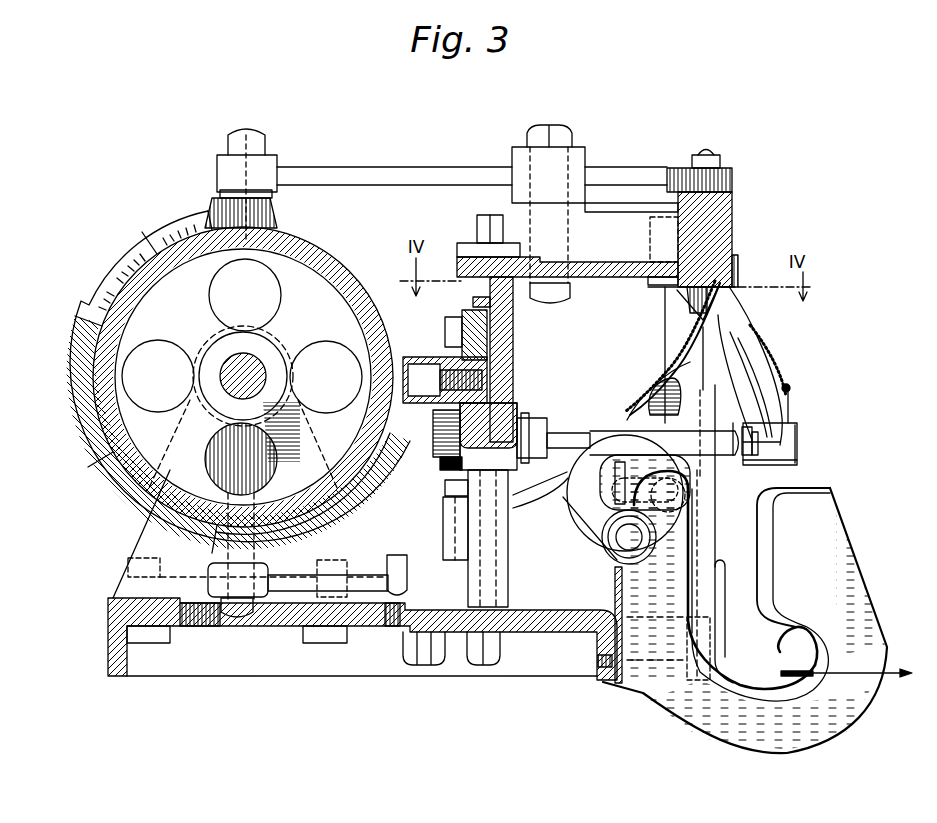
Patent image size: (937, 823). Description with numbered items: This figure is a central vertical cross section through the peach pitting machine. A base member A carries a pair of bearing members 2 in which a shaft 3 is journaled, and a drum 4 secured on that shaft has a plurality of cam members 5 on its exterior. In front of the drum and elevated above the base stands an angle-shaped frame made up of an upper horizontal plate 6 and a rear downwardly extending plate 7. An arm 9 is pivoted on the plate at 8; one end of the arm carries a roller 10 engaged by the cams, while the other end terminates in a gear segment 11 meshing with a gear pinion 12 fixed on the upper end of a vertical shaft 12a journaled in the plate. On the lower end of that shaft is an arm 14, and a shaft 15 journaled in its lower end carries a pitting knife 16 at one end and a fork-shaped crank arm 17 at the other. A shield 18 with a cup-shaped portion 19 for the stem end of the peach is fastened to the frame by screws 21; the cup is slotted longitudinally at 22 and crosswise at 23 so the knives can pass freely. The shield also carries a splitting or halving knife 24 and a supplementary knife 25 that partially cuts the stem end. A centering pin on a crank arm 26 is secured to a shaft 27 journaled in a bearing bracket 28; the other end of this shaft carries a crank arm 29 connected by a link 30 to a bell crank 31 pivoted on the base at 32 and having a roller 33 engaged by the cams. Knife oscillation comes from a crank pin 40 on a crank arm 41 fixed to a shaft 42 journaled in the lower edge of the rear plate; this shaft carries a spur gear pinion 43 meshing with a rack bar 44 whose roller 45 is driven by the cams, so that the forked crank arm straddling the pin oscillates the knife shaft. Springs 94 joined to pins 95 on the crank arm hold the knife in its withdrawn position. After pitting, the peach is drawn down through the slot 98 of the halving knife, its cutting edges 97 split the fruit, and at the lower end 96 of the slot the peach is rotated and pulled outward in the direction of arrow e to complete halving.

The bearing members 2 is at (118, 556).
The shaft 3 is at (253, 377).
The drum 4 is at (72, 430).
The cam members 5 is at (75, 326).
The upper horizontal plate 6 is at (640, 276).
The rear downwardly extending plate 7 is at (518, 365).
The pivot 8 is at (568, 140).
The arm 9 is at (418, 168).
The roller 10 is at (218, 194).
The gear segments 11 is at (683, 170).
The gear pinion 12 is at (734, 184).
The shaft 12a is at (720, 157).
The arm 14 is at (742, 320).
The shaft 15 is at (797, 447).
The pitting knife 16 is at (740, 432).
The fork-shaped crank arm 17 is at (797, 461).
The shield 18 is at (612, 690).
The cup-shaped portion 19 is at (632, 392).
The screws 21 is at (740, 266).
The longitudinal slot 22 is at (618, 527).
The crosswise slot 23 is at (633, 424).
The splitting or halving knife 24 is at (690, 722).
The supplementary knife 25 is at (660, 377).
The crank arm 26 is at (578, 500).
The shaft 27 is at (614, 545).
The bearing bracket 28 is at (612, 568).
The crank arm 29 is at (695, 518).
The link 30 is at (514, 512).
The bell crank 31 is at (455, 522).
The pivot 32 is at (398, 558).
The roller 33 is at (200, 562).
The crank pin 40 is at (566, 441).
The crank arm 41 is at (524, 418).
The shaft 42 is at (516, 395).
The spur gear pinion 43 is at (440, 475).
The rack bar 44 is at (438, 457).
The roller 45 is at (426, 358).
The springs 94 is at (783, 358).
The rods or pins 95 is at (795, 410).
The lower end of slot 96 is at (780, 650).
The cutting edges 97 is at (757, 560).
The slot 98 is at (772, 537).
The base member A is at (560, 640).
The arrow e is at (846, 663).